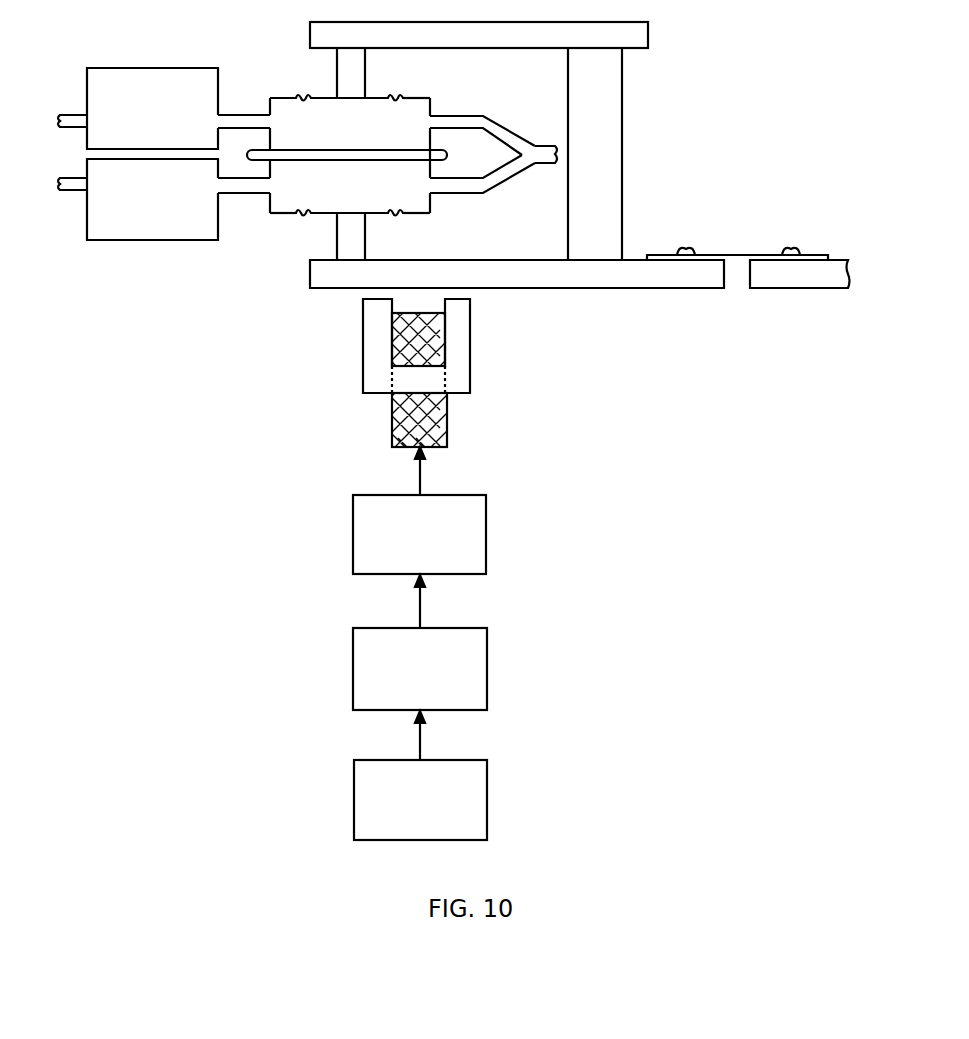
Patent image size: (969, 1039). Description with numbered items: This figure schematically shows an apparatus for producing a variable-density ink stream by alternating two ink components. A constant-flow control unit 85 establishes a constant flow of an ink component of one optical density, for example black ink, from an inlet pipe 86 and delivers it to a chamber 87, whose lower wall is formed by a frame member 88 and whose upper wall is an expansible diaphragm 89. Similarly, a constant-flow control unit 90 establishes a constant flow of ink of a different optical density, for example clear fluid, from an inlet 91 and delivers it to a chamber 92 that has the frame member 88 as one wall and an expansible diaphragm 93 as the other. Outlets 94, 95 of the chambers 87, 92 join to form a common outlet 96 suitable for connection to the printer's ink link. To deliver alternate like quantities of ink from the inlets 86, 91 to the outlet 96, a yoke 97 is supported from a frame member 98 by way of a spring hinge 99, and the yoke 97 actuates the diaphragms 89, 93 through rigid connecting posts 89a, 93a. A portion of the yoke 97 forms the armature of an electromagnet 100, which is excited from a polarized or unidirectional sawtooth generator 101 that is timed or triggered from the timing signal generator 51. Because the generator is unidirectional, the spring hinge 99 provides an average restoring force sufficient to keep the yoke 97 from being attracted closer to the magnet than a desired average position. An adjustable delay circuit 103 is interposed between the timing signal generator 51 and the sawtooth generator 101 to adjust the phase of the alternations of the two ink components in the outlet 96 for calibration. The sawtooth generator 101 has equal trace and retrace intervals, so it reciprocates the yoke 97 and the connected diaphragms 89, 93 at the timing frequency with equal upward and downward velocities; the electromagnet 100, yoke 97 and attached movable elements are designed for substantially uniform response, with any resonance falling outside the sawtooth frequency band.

The constant-flow control unit 85 is at (148, 67).
The inlet pipe 86 is at (68, 115).
The chamber 87 is at (286, 122).
The frame member 88 is at (448, 155).
The expansible diaphragm 89 is at (383, 96).
The rigid connecting post 89a is at (337, 88).
The constant-flow control unit 90 is at (146, 241).
The inlet 91 is at (70, 193).
The chamber 92 is at (292, 195).
The expansible diaphragm 93 is at (383, 215).
The rigid connecting post 93a is at (337, 240).
The outlet 94 is at (457, 117).
The outlet 95 is at (459, 188).
The common outlet 96 is at (548, 150).
The yoke 97 is at (612, 136).
The frame member 98 is at (782, 280).
The spring hinge 99 is at (720, 256).
The electromagnet 100 is at (462, 357).
The unidirectional sawtooth generator 101 is at (487, 538).
The adjustable delay circuit 103 is at (495, 668).
The timing signal generator 51 is at (487, 788).